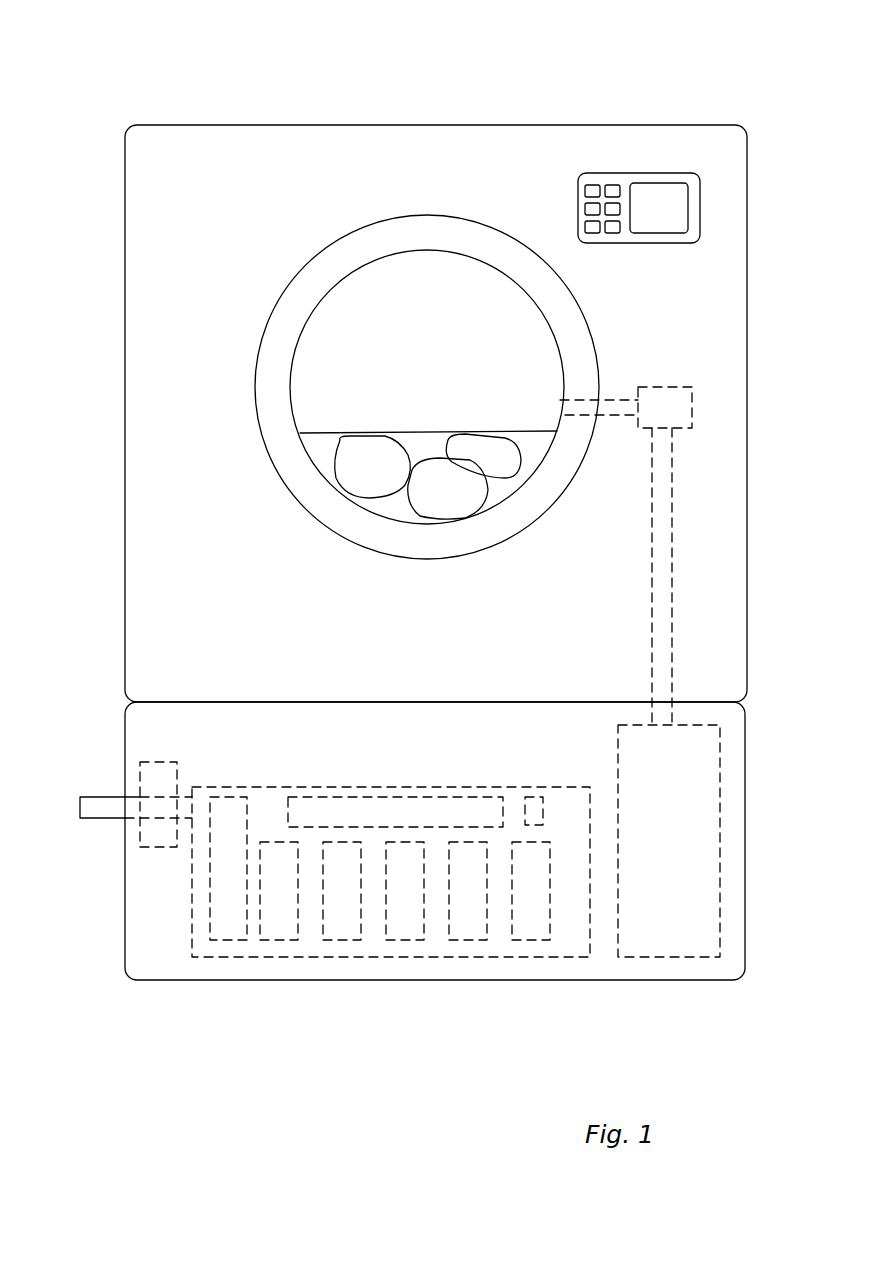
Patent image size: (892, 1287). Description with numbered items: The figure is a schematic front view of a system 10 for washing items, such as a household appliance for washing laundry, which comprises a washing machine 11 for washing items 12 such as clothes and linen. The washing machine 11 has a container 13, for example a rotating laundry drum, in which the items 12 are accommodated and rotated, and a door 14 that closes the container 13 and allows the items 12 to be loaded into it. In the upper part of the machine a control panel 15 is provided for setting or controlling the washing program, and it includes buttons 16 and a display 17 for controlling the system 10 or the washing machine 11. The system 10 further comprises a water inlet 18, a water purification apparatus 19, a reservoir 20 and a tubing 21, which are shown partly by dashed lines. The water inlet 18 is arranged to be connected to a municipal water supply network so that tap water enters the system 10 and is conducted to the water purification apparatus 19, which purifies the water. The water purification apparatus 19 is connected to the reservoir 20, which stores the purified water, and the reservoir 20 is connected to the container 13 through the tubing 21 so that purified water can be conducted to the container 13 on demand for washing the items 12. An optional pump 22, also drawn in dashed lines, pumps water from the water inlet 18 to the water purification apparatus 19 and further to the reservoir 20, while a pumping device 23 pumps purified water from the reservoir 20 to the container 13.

The system 10 is at (412, 62).
The washing machine 11 is at (182, 150).
The items 12 is at (340, 466).
The container 13 is at (356, 288).
The door 14 is at (300, 290).
The control panel 15 is at (625, 178).
The buttons 16 is at (588, 185).
The display 17 is at (678, 190).
The water inlet 18 is at (103, 808).
The water purification apparatus 19 is at (203, 945).
The reservoir 20 is at (650, 945).
The tubing 21 is at (668, 598).
The pump 22 is at (143, 778).
The pumping device 23 is at (688, 404).